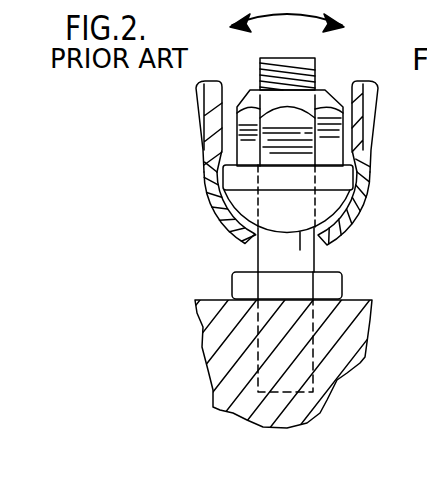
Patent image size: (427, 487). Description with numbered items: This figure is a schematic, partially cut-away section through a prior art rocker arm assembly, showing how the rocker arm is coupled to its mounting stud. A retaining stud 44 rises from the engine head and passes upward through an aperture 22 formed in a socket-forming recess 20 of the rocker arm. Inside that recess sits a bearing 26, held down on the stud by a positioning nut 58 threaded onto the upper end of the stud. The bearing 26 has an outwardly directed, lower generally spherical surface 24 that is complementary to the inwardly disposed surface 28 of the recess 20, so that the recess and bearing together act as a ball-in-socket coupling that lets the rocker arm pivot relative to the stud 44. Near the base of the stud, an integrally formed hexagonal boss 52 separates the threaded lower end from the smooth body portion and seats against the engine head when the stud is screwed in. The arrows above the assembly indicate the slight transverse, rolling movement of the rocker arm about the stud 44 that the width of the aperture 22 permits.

The socket-forming recess 20 is at (212, 187).
The aperture 22 is at (247, 247).
The lower generally spherical surface 24 is at (202, 167).
The bearing 26 is at (275, 173).
The inwardly disposed surface 28 is at (360, 183).
The retaining stud 44 is at (306, 260).
The hexagonal boss 52 is at (233, 283).
The positioning nut 58 is at (306, 118).